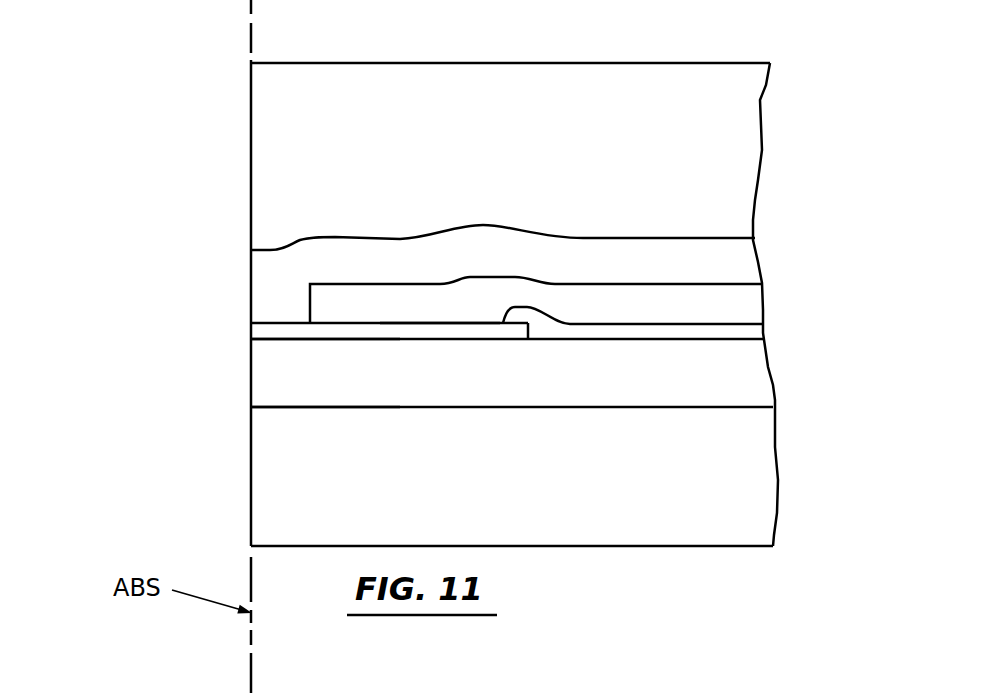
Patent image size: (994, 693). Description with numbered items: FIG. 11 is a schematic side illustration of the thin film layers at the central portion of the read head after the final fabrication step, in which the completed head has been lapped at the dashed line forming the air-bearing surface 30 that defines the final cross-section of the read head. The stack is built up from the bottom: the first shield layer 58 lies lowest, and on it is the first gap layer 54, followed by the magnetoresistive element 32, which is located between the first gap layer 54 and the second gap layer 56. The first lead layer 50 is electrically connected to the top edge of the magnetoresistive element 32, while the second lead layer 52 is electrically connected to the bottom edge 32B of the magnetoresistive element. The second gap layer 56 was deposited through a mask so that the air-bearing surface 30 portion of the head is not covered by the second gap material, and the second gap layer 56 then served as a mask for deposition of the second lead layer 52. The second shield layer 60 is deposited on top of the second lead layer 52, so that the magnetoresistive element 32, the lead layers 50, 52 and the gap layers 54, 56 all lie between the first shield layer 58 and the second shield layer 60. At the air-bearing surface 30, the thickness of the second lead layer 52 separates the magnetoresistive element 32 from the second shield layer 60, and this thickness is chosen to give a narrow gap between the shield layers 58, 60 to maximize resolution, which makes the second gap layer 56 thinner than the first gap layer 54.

The air-bearing surface 30 is at (251, 35).
The magnetoresistive element 32 is at (403, 312).
The bottom edge of the magnetoresistive element 32B is at (252, 329).
The first sense current thin film lead layer 50 is at (628, 335).
The second sense current thin film lead layer 52 is at (280, 272).
The first thin film gap layer 54 is at (283, 371).
The second thin film gap layer 56 is at (450, 300).
The first thin film shield layer 58 is at (282, 486).
The second thin film shield layer 60 is at (625, 128).